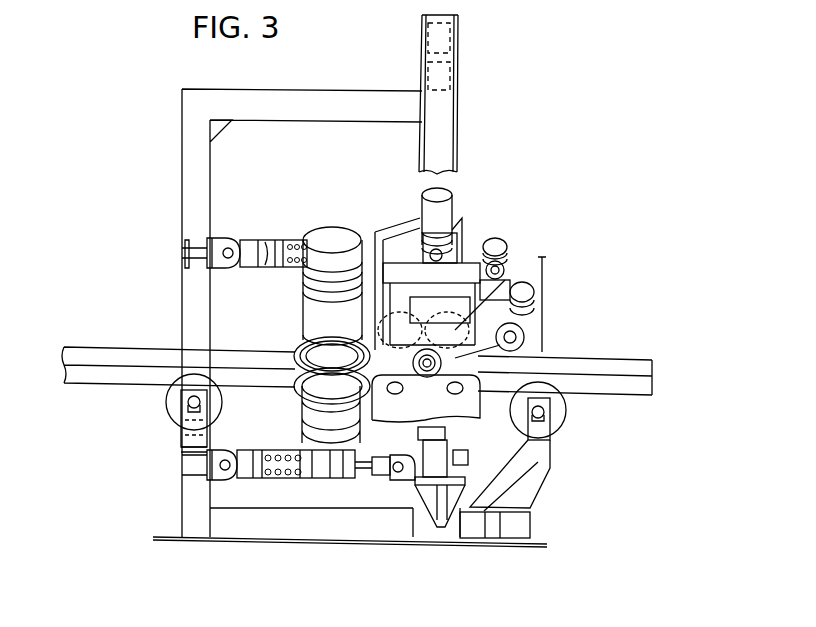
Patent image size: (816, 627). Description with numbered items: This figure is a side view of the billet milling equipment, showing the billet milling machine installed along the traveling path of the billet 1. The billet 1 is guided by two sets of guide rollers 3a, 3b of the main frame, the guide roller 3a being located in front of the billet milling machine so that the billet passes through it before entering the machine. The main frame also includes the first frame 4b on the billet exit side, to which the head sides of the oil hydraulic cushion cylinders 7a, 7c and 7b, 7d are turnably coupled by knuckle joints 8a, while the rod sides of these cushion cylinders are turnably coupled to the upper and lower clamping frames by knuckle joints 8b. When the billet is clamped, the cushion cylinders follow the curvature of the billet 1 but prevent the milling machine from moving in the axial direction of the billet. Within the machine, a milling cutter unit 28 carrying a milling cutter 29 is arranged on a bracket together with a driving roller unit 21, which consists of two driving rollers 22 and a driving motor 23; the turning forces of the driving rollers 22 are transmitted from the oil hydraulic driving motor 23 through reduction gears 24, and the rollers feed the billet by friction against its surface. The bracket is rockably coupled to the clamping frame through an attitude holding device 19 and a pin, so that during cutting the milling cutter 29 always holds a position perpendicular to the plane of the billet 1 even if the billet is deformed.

The billet 1 is at (610, 396).
The guide roller 3a is at (560, 426).
The guide roller 3b is at (170, 415).
The first frame 4b is at (185, 148).
The cushion cylinder 7a is at (209, 215).
The cushion cylinder 7c is at (247, 238).
The cushion cylinder 7b is at (286, 515).
The cushion cylinder 7d is at (312, 490).
The knuckle joint 8a is at (207, 244).
The knuckle joint 8b is at (398, 472).
The attitude holding device 19 is at (445, 200).
The driving roller unit 21 is at (548, 305).
The driving roller 22 is at (462, 318).
The driving motor 23 is at (495, 245).
The reduction gear 24 is at (517, 300).
The milling cutter unit 28 is at (330, 228).
The milling cutter 29 is at (298, 345).